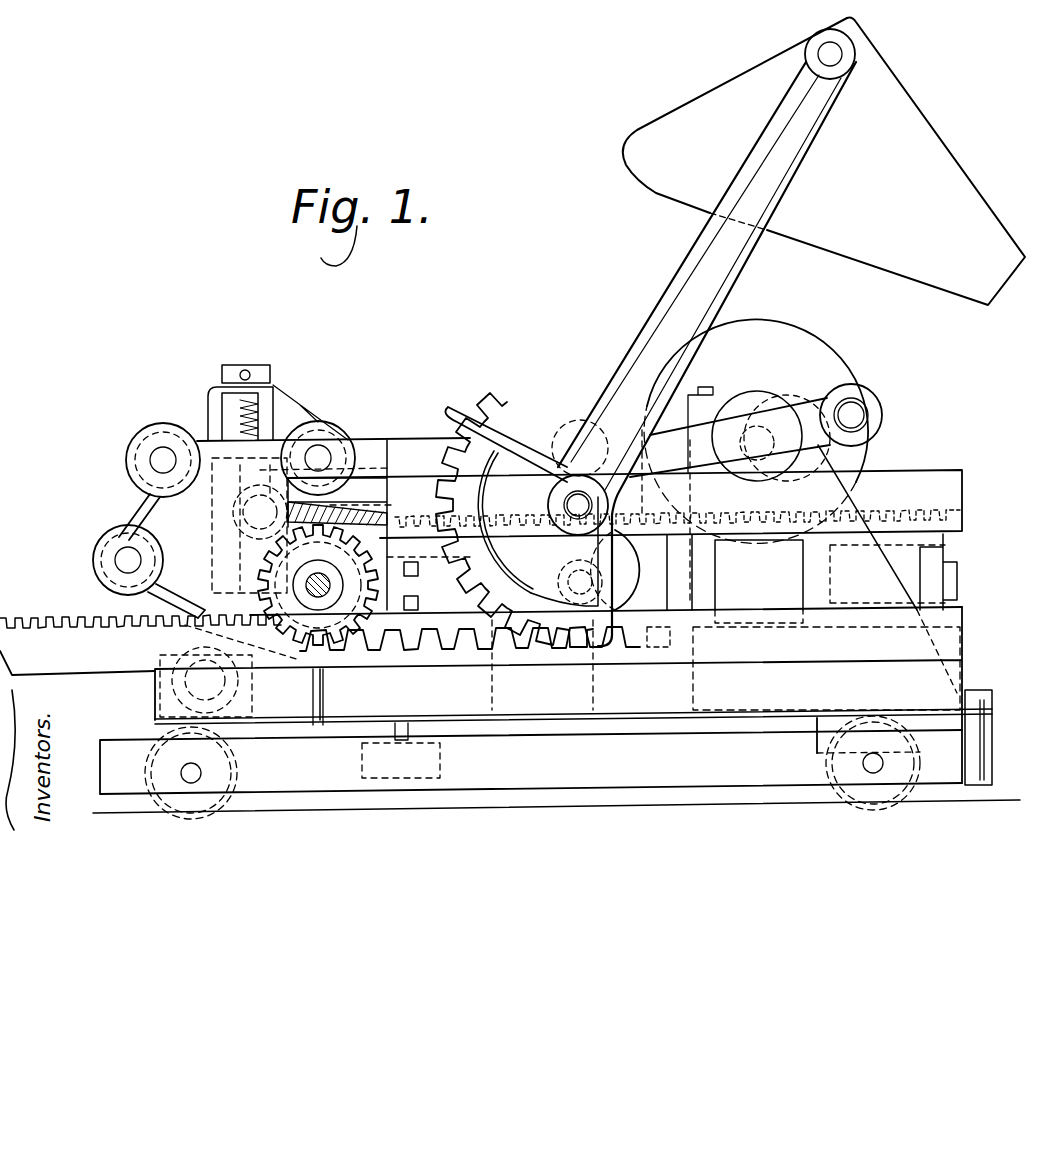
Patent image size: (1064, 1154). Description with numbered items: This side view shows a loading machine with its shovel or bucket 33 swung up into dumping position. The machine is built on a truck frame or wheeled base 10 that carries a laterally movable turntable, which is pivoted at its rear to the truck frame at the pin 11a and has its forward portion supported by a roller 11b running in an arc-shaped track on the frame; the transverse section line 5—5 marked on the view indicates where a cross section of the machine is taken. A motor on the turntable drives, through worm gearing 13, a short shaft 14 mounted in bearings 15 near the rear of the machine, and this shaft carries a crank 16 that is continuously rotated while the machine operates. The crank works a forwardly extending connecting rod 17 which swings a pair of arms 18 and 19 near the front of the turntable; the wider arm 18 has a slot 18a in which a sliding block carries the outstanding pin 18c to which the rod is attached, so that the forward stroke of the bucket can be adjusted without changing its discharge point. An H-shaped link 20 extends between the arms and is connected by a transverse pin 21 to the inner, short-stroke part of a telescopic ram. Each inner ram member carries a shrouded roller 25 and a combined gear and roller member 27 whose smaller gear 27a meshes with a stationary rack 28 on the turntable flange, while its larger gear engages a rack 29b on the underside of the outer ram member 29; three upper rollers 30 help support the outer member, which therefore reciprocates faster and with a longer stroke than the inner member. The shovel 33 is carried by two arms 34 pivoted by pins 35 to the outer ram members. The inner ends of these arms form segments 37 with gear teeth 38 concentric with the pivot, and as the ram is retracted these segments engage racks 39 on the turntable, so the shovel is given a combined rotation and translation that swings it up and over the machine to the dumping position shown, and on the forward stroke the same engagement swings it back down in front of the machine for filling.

The frame 5 is at (317, 420).
The truck frame 10 is at (556, 767).
The pivotal connecting pin 11a is at (980, 696).
The roller 11b is at (432, 748).
The worm gearing 13 is at (806, 348).
The short shaft 14 is at (744, 400).
The bearings 15 is at (812, 569).
The crank 16 is at (797, 395).
The connecting rod 17 is at (756, 430).
The swinging arm 18 is at (208, 412).
The slot 18a is at (255, 355).
The outstanding pin 18c is at (240, 535).
The swinging arm 19 is at (200, 612).
The link 20 is at (223, 688).
The transverse pin 21 is at (155, 462).
The roller 25 is at (613, 601).
The combined gear and roller member 27 is at (258, 589).
The gear 27a is at (365, 592).
The stationary rack 28 is at (80, 613).
The outer ram member 29 is at (407, 492).
The rack 29b is at (365, 450).
The upper rollers 30 is at (151, 430).
The shovel 33 is at (630, 162).
The arms 34 is at (688, 270).
The pins 35 is at (580, 432).
The segments 37 is at (100, 556).
The gear teeth 38 is at (456, 421).
The racks 39 is at (606, 638).